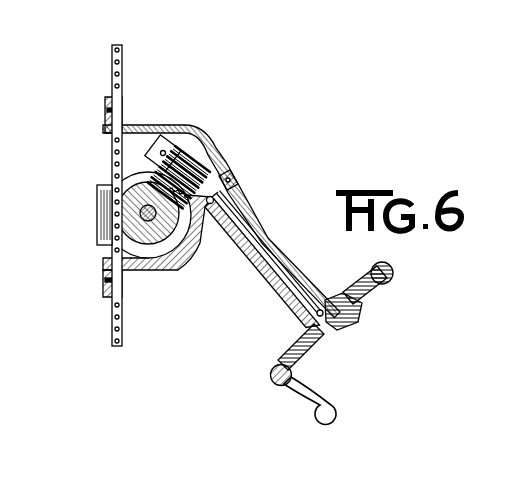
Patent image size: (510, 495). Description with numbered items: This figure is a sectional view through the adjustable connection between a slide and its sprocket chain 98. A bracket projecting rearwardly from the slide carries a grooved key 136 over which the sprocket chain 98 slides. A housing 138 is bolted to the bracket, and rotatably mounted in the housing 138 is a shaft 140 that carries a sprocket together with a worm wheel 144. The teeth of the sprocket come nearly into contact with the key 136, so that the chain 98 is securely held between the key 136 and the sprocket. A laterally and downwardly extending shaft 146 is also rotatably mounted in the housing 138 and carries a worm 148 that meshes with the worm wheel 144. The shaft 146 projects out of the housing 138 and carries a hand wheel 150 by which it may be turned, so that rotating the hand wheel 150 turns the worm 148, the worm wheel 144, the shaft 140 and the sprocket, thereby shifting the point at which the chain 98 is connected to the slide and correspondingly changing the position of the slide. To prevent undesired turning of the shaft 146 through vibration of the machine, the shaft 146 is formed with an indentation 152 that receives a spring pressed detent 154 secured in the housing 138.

The sprocket chain 98 is at (112, 67).
The grooved key 136 is at (100, 205).
The housing 138 is at (145, 129).
The shaft 140 is at (143, 215).
The worm wheel 144 is at (156, 238).
The shaft 146 is at (261, 254).
The worm 148 is at (201, 163).
The hand wheel 150 is at (372, 294).
The indentation 152 is at (209, 204).
The spring pressed detent 154 is at (240, 188).